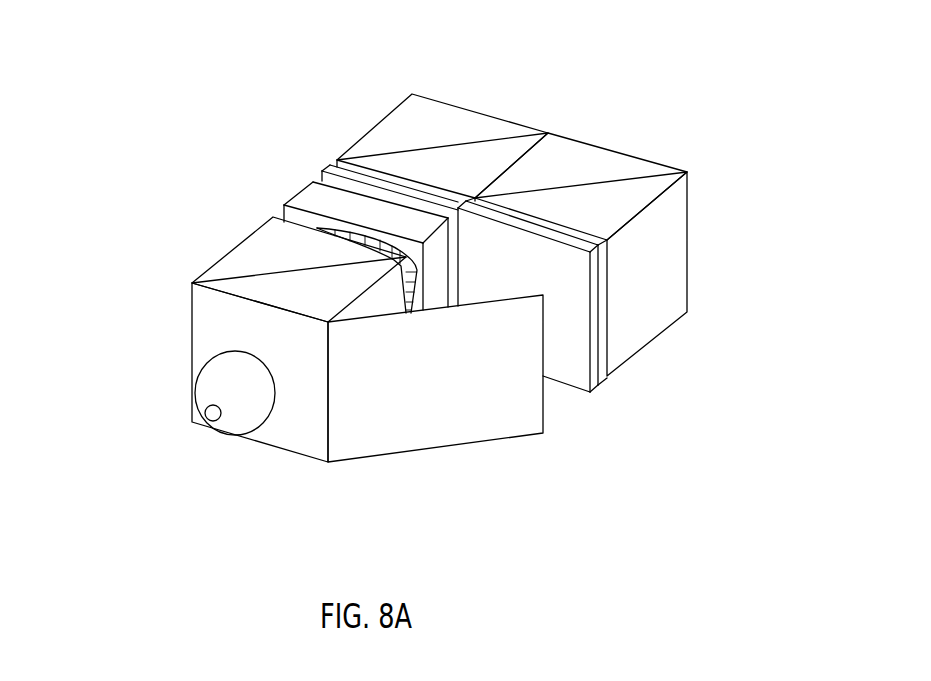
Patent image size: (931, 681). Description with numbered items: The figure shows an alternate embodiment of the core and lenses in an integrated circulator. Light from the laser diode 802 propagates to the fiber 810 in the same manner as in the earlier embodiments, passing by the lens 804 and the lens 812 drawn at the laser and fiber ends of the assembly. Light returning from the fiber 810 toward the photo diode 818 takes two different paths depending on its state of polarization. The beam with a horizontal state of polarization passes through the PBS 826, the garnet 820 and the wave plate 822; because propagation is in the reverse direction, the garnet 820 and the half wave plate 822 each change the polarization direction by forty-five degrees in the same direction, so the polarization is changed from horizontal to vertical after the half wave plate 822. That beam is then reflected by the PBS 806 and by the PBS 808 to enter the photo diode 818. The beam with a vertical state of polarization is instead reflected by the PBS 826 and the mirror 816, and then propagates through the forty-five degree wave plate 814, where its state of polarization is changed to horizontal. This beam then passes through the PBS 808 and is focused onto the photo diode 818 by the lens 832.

The laser diode 802 is at (493, 87).
The Lens 804 is at (525, 100).
The PBS 806 is at (357, 118).
The PBS 808 is at (712, 293).
The fiber 810 is at (217, 442).
The Lens 812 is at (179, 395).
The 45° quarter wave plate 814 is at (620, 387).
The mirror 816 is at (438, 476).
The photo diode 818 is at (678, 147).
The garnet 820 is at (268, 191).
The half wave plate 822 is at (296, 162).
The PBS 826 is at (220, 236).
The lens 832 is at (599, 126).